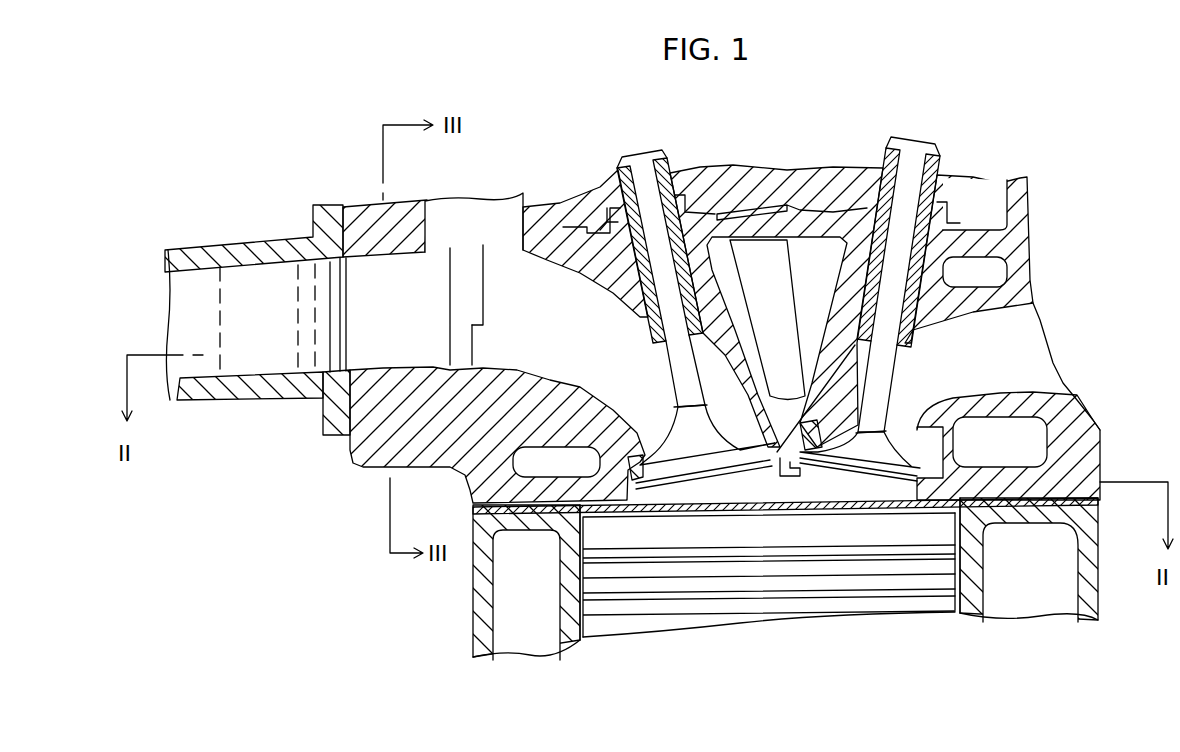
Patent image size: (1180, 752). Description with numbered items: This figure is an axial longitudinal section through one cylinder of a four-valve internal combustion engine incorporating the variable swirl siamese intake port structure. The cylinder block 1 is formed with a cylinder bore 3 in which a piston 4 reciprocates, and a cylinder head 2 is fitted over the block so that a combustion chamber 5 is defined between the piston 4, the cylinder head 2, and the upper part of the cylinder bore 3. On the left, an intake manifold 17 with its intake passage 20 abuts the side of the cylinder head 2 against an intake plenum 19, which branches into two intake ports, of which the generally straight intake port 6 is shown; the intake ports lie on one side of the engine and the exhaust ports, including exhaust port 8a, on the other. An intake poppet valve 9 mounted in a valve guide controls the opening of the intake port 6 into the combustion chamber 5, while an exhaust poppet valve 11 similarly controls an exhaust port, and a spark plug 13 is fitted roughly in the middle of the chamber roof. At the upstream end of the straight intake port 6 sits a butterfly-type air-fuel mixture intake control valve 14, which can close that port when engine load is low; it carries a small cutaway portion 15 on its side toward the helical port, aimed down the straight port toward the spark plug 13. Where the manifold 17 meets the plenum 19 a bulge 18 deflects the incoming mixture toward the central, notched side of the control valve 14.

The cylinder block 1 is at (1083, 568).
The cylinder head 2 is at (1073, 445).
The cylinder bore 3 is at (958, 586).
The piston 4 is at (830, 583).
The combustion chamber 5 is at (740, 490).
The intake port 6 is at (542, 290).
The exhaust port 8a is at (1030, 348).
The poppet valve 9 is at (682, 378).
The poppet valve 11 is at (873, 388).
The spark plug 13 is at (790, 478).
The air-fuel mixture intake control valve 14 is at (485, 293).
The cutaway portion 15 is at (480, 345).
The intake manifold 17 is at (222, 393).
The bulge 18 is at (330, 392).
The intake plenum 19 is at (352, 307).
The intake passage 20 is at (250, 283).